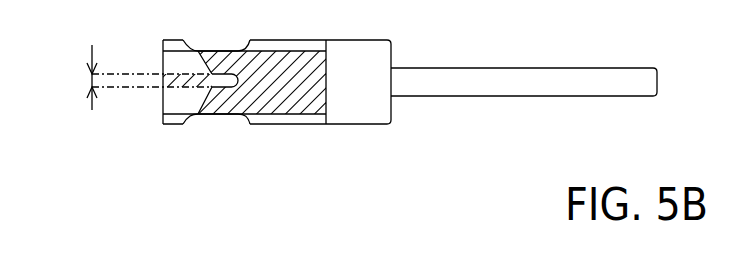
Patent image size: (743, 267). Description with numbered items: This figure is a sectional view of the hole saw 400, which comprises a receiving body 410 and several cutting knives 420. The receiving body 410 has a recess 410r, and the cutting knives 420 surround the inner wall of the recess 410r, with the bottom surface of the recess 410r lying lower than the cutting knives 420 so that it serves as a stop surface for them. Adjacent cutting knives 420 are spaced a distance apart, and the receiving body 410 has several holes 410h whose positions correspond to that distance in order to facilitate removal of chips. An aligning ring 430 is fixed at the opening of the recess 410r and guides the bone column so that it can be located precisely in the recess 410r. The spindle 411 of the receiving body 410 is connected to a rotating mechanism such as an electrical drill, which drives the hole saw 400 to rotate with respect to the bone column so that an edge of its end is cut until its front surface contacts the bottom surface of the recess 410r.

The hole saw 400 is at (645, 42).
The receiving body 410 is at (370, 124).
The spindle 411 is at (477, 97).
The hole 410h is at (231, 125).
The recess 410r is at (182, 82).
The cutting knife 420 is at (302, 106).
The aligning ring 430 is at (172, 124).